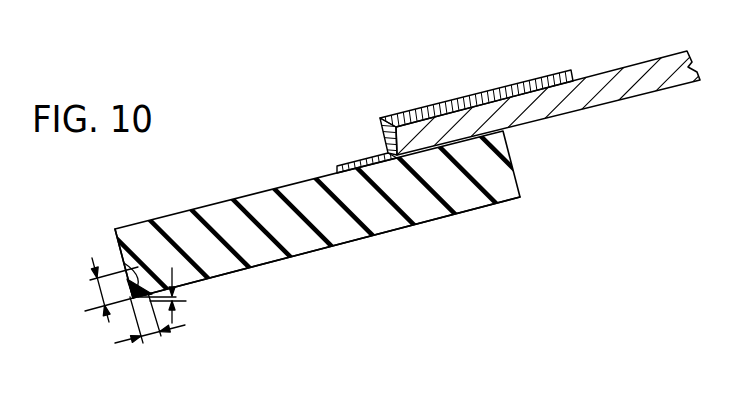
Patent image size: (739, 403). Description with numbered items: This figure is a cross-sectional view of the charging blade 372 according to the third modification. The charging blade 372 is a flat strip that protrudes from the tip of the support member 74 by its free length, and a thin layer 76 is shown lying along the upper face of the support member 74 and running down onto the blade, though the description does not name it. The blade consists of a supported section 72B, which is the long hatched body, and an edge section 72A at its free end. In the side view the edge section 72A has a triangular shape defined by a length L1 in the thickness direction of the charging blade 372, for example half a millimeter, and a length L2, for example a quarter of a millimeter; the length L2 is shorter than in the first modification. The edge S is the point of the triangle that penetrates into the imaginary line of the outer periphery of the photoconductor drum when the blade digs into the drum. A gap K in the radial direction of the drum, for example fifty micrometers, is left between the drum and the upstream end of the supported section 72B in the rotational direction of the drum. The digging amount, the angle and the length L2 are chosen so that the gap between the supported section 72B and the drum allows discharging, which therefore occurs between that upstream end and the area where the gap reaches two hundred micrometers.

The edge section 72A is at (124, 263).
The supported section 72B is at (432, 212).
The charging blade 372 is at (488, 214).
The support member 74 is at (640, 72).
The adhesive sheet 76 is at (531, 80).
The length L1 is at (105, 290).
The length L2 is at (150, 335).
The edge S is at (132, 300).
The gap K is at (176, 299).